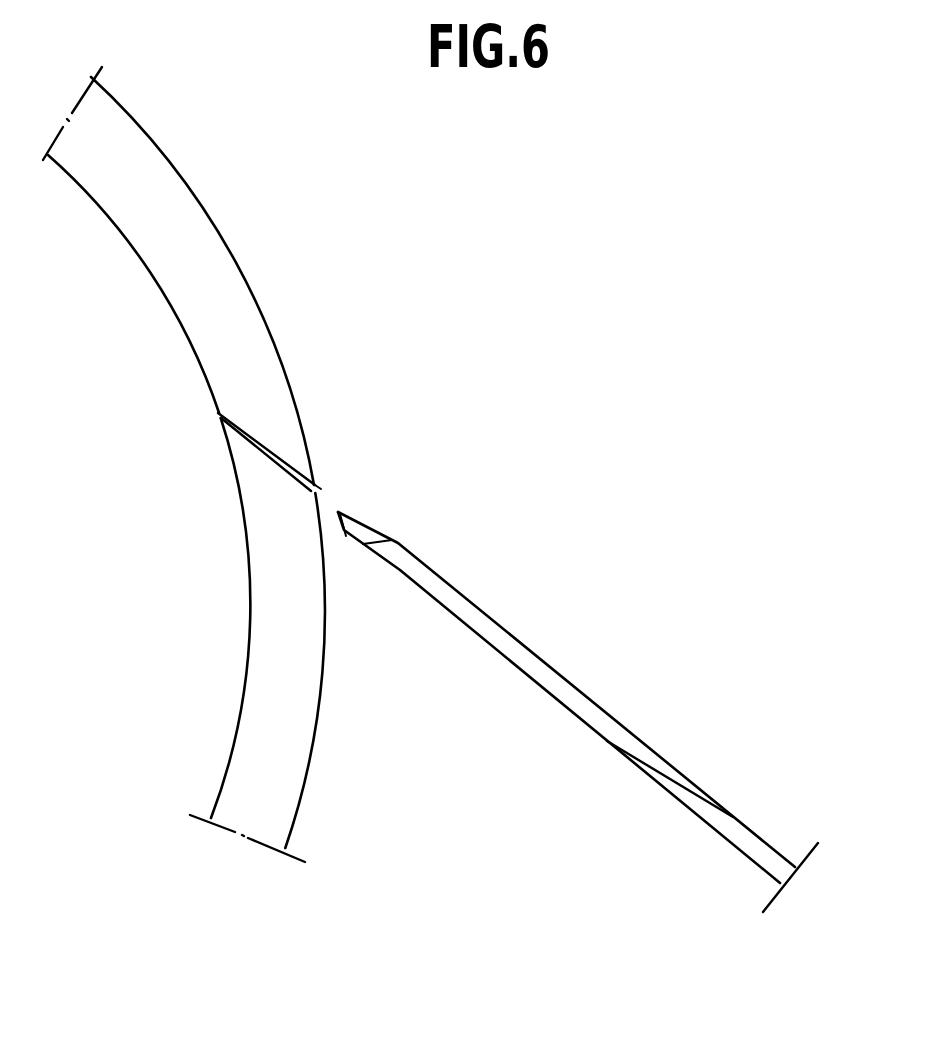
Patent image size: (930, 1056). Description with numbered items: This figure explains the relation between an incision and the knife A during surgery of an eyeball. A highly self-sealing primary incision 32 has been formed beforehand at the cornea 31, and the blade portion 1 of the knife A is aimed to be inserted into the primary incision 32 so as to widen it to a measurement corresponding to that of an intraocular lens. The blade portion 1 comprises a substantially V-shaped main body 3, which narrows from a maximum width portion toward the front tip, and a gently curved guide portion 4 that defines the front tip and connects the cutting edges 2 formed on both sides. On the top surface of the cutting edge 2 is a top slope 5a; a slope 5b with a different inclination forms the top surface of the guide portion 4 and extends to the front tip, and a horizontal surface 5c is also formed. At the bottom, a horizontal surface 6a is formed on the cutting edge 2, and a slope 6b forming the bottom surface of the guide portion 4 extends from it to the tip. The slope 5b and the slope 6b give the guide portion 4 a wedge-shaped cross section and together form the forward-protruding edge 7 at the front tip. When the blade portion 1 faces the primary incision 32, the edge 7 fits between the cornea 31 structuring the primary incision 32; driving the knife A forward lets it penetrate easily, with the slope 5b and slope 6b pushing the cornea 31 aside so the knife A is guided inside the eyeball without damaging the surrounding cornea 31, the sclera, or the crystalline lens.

The blade portion 1 is at (576, 666).
The cutting edge 2 is at (563, 705).
The main body 3 is at (534, 618).
The guide portion 4 is at (404, 537).
The top slope 5a is at (560, 680).
The slope 5b is at (368, 533).
The horizontal surface 5c is at (630, 732).
The horizontal surface 6a is at (490, 646).
The slope 6b is at (347, 527).
The edge 7 is at (323, 518).
The cornea 31 is at (210, 230).
The primary incision 32 is at (321, 489).
The knife A is at (747, 830).